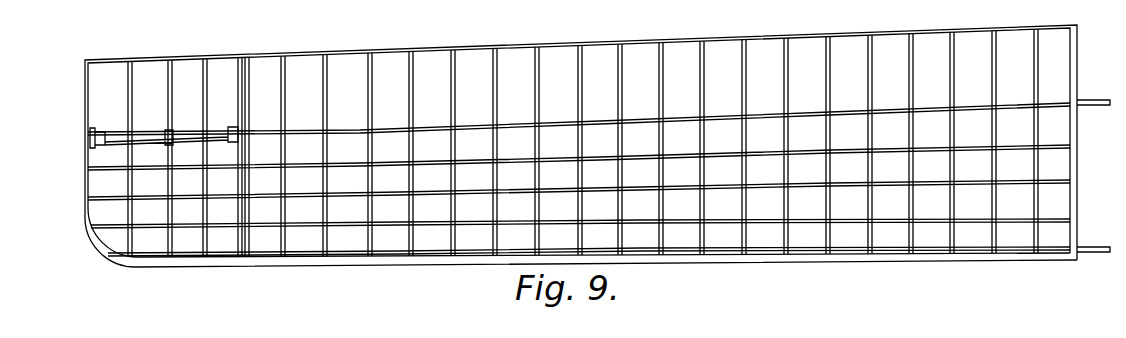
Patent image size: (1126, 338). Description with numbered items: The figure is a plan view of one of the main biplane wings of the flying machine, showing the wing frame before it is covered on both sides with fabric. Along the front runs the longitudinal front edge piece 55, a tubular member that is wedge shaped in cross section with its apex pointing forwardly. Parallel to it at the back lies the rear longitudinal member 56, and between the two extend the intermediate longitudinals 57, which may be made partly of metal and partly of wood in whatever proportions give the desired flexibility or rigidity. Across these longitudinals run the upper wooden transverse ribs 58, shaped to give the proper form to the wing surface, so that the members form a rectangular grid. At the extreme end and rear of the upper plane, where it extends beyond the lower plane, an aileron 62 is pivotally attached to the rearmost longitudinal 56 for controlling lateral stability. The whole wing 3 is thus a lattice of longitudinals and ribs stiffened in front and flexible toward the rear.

The grating 3 is at (478, 238).
The longitudinal front edge piece 55 is at (353, 258).
The rear longitudinal member 56 is at (345, 131).
The intermediate longitudinals 57 is at (382, 168).
The upper transverse ribs 58 is at (455, 110).
The ailerons 62 is at (108, 73).